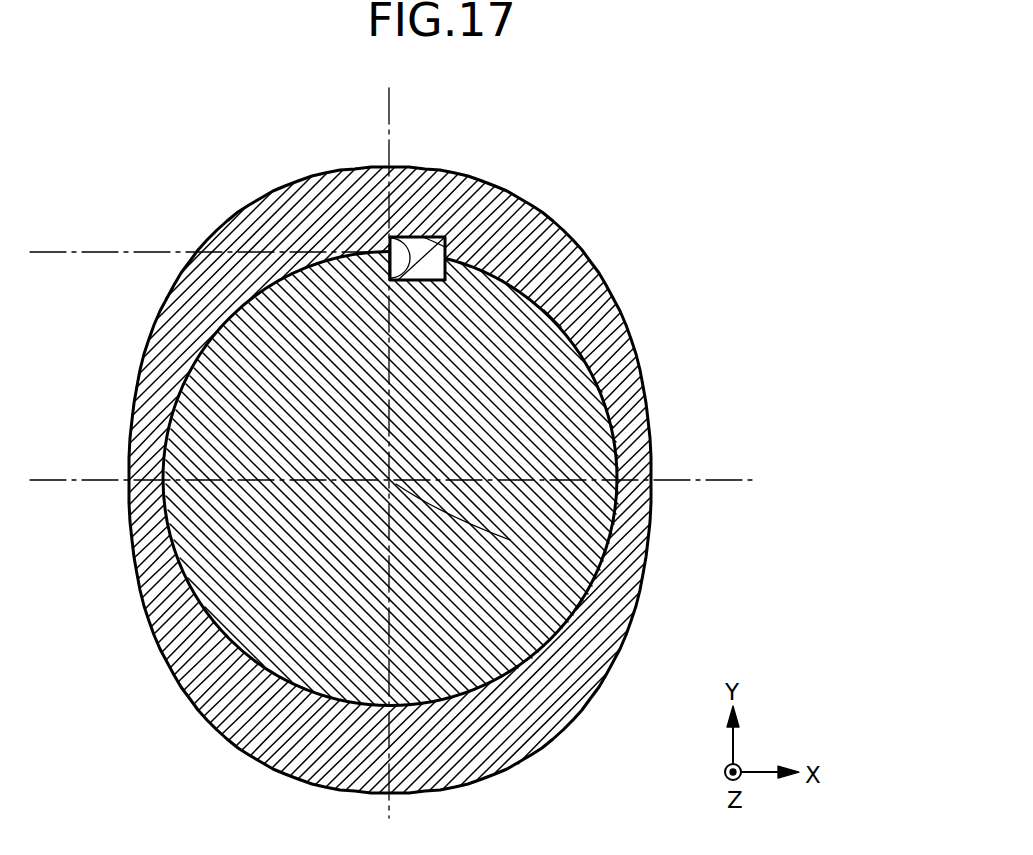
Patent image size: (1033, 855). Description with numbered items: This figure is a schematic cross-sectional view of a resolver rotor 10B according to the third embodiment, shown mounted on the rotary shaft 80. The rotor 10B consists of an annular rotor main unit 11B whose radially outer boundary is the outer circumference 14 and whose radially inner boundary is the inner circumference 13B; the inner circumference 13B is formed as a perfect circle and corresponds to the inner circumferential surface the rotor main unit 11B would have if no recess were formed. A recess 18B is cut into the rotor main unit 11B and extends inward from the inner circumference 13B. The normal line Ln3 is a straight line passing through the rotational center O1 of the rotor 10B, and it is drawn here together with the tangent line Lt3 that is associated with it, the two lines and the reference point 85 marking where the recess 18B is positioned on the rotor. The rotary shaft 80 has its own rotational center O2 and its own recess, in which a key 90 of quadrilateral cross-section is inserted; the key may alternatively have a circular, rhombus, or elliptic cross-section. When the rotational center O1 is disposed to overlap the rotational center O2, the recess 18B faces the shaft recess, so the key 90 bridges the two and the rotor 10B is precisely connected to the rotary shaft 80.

The outer circumference 14 is at (648, 544).
The rotor main unit 11B is at (573, 270).
The inner circumference 13B is at (588, 366).
The rotary shaft 80 is at (232, 396).
The recess 18B is at (445, 237).
The key 90 is at (428, 268).
The contact point 85 is at (389, 250).
The rotor 10B is at (730, 258).
The rotational center O1 is at (396, 484).
The rotational center O2 is at (453, 512).
The normal line Ln3 is at (388, 115).
The horizontal tangent reference line Lt3 is at (70, 248).